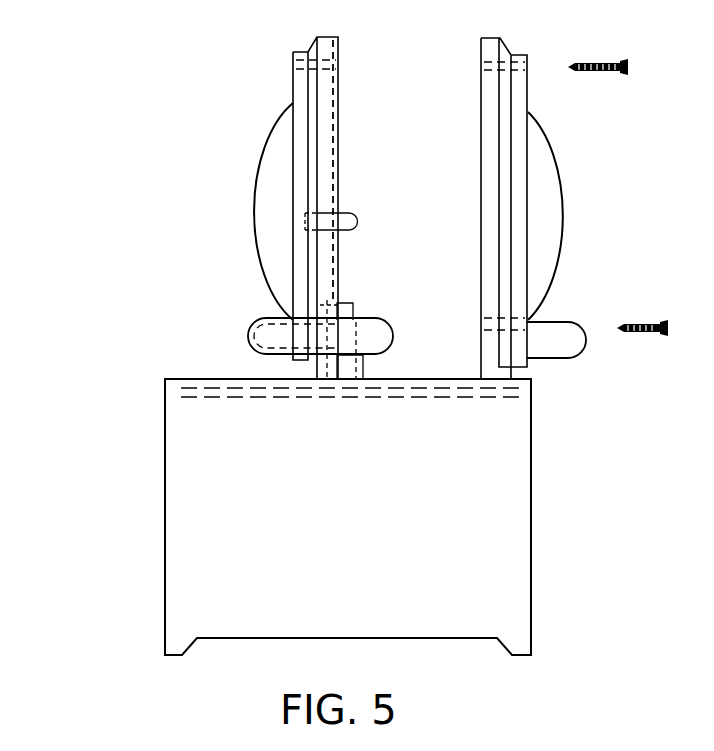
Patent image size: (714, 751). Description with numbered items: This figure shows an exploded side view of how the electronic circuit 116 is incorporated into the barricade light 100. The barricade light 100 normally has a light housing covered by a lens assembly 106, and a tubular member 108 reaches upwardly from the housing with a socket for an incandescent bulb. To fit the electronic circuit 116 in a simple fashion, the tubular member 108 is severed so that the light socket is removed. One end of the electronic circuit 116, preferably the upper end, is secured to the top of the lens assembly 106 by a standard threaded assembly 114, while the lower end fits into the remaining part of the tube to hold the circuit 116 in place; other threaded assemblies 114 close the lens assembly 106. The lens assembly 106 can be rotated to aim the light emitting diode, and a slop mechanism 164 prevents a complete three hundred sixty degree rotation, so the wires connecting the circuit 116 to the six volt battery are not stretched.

The barricade light 100 is at (148, 428).
The lens assembly 106 is at (268, 172).
The tubular member 108 is at (352, 312).
The threaded assembly 114 is at (536, 67).
The electronic circuit 116 is at (472, 328).
The slop mechanism 164 is at (346, 366).